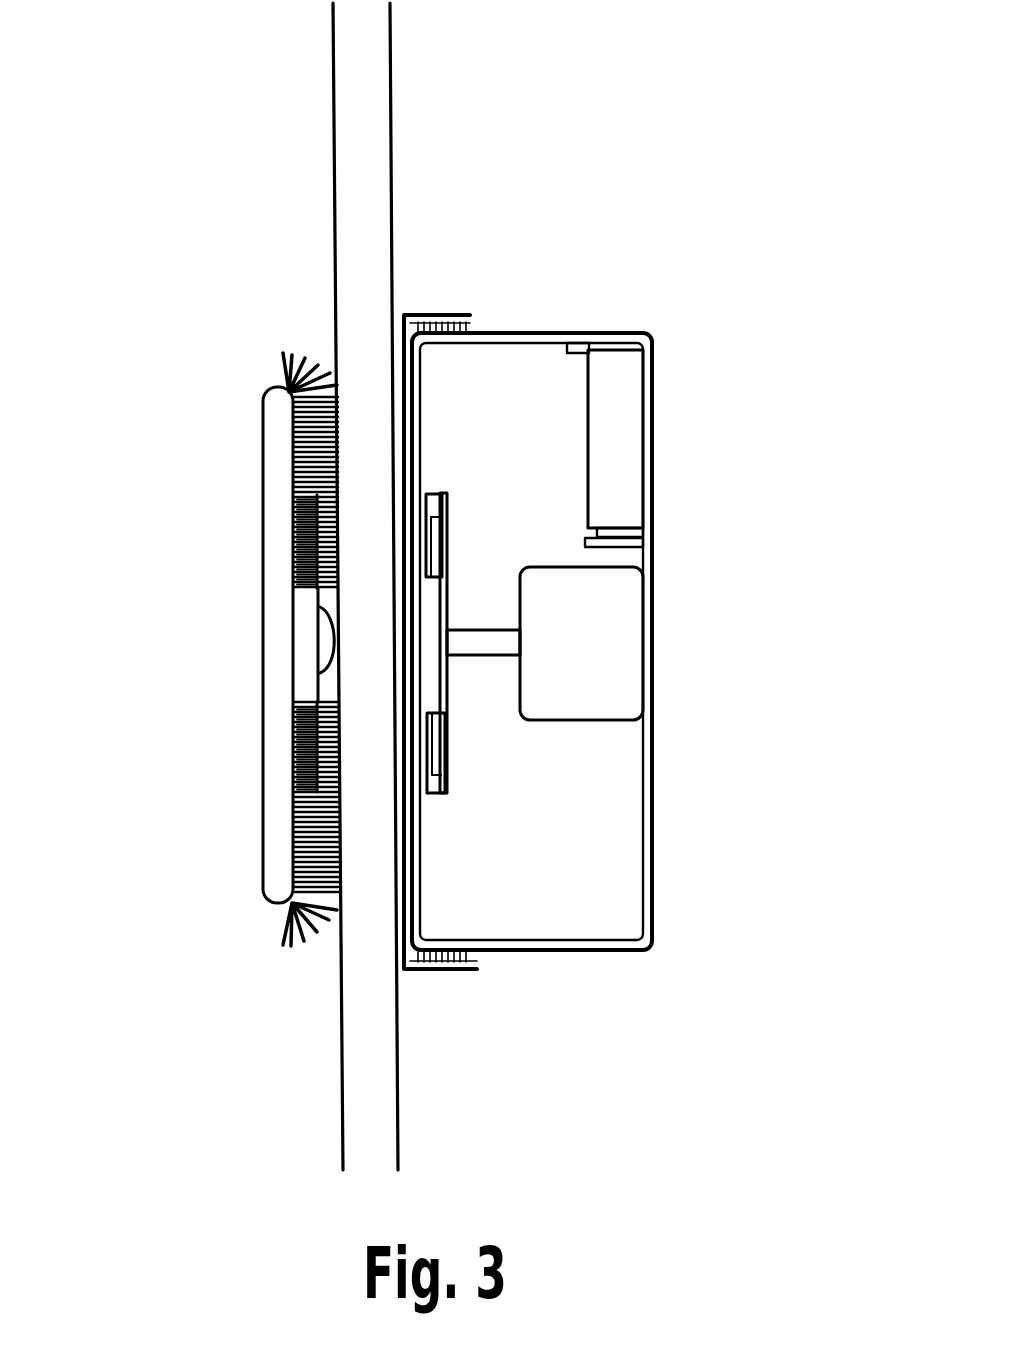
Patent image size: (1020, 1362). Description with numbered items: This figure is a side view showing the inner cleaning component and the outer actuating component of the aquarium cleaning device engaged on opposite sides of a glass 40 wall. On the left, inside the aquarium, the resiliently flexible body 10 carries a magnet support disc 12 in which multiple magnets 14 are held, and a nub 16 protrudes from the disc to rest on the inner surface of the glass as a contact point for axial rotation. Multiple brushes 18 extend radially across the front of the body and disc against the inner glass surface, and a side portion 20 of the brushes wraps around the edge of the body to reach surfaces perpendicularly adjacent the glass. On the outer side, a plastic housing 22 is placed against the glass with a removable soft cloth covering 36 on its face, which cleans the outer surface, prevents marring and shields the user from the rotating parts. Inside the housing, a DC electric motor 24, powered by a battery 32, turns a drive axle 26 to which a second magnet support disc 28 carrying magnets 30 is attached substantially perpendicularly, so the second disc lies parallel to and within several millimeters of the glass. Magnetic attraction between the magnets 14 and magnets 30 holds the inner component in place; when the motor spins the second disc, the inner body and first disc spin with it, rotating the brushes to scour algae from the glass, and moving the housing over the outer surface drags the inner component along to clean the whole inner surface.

The resiliently flexible body 10 is at (265, 815).
The magnet support disc 12 is at (307, 597).
The magnets 14 is at (290, 548).
The nub 16 is at (320, 643).
The brushes 18 is at (317, 407).
The side portion 20 is at (285, 940).
The plastic housing 22 is at (573, 330).
The DC electric motor 24 is at (615, 637).
The drive axle 26 is at (475, 655).
The second magnet support disc 28 is at (440, 600).
The magnets 30 is at (440, 530).
The battery 32 is at (618, 442).
The soft cloth covering 36 is at (458, 312).
The glass 40 is at (392, 95).